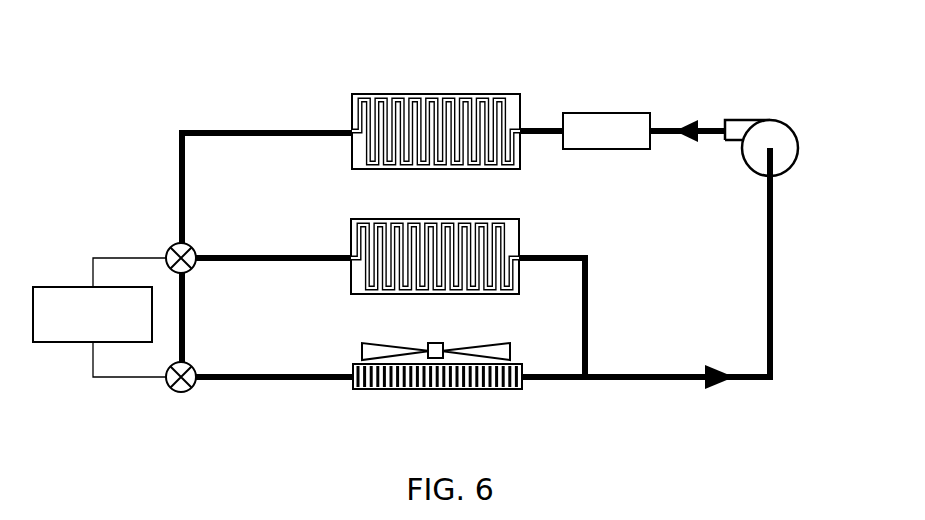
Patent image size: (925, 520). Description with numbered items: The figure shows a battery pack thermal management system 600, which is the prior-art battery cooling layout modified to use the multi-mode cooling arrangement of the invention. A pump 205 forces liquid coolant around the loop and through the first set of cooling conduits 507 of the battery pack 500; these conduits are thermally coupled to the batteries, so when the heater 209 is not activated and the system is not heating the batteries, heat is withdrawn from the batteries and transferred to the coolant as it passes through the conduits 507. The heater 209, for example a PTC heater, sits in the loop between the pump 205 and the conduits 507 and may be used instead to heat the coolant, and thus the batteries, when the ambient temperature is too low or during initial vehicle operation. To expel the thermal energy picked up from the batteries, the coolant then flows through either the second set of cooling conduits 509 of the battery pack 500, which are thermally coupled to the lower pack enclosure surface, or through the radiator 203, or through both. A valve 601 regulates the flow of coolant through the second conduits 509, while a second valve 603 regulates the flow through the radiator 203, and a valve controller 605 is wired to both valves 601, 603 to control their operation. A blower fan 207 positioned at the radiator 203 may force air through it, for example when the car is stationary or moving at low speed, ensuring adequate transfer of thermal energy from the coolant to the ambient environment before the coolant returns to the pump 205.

The battery pack thermal management system 600 is at (793, 84).
The battery pack 500 is at (423, 94).
The first set of cooling conduits 507 is at (380, 113).
The second set of cooling conduits 509 is at (379, 240).
The heater 209 is at (596, 113).
The pump 205 is at (742, 148).
The valve 601 is at (197, 247).
The valve 603 is at (197, 366).
The valve controller 605 is at (42, 287).
The blower fan 207 is at (437, 343).
The radiator 203 is at (453, 380).